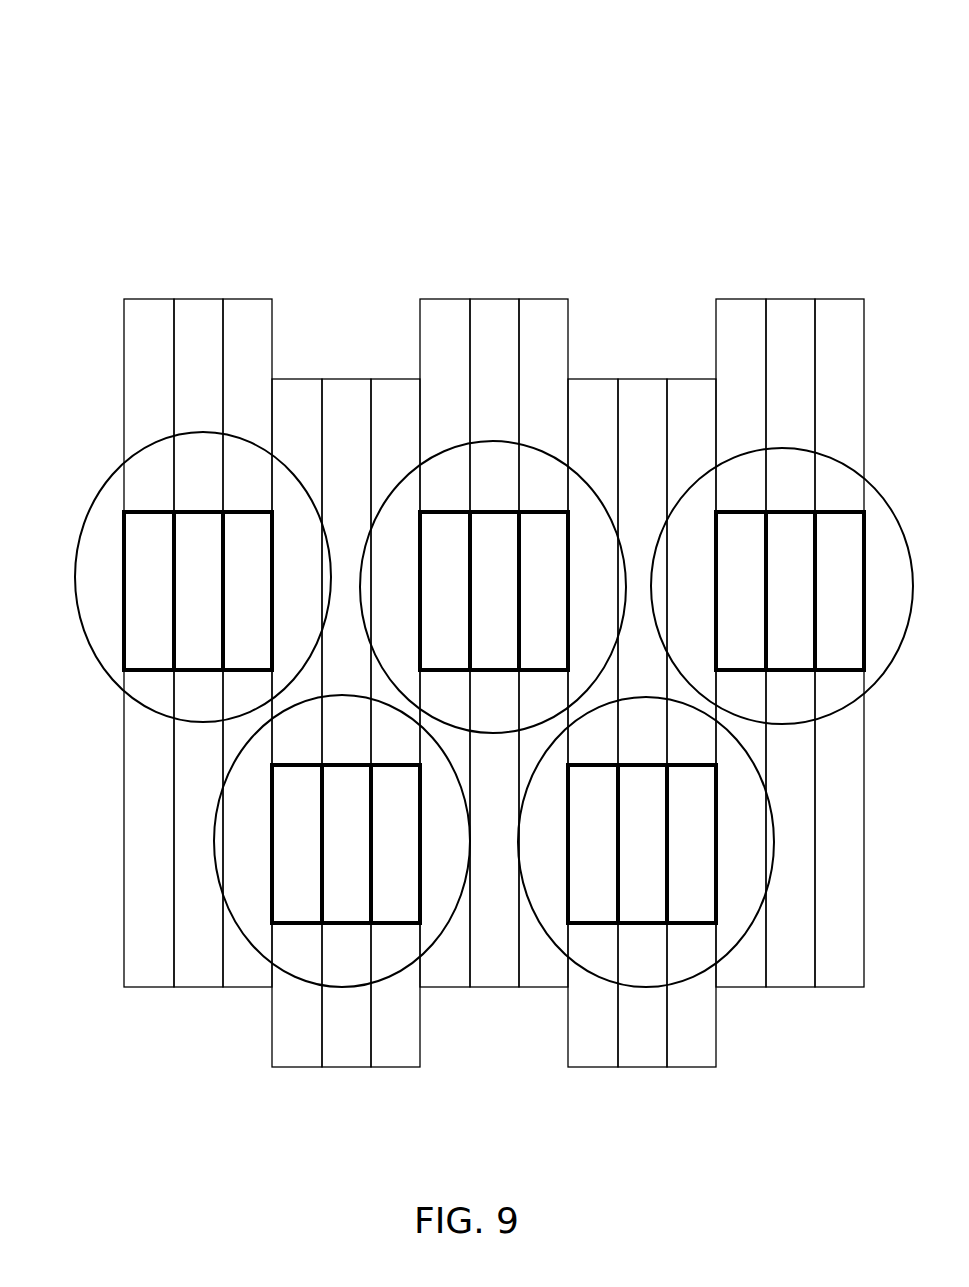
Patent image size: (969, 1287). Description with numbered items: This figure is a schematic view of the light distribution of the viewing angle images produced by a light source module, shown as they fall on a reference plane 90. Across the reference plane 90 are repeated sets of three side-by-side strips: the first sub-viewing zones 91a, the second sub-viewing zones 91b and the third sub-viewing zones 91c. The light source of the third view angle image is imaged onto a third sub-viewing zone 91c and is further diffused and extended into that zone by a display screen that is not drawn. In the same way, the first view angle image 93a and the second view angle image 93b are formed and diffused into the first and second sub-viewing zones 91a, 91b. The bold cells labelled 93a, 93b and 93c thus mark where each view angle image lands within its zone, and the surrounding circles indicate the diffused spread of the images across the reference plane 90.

The reference plane 90 is at (335, 91).
The first sub-viewing zone 91a is at (149, 308).
The second sub-viewing zone 91b is at (199, 308).
The third sub-viewing zone 91c is at (247, 308).
The first view angle image 93a is at (149, 553).
The second view angle image 93b is at (191, 636).
The third sub-pixel cell 93c is at (249, 643).